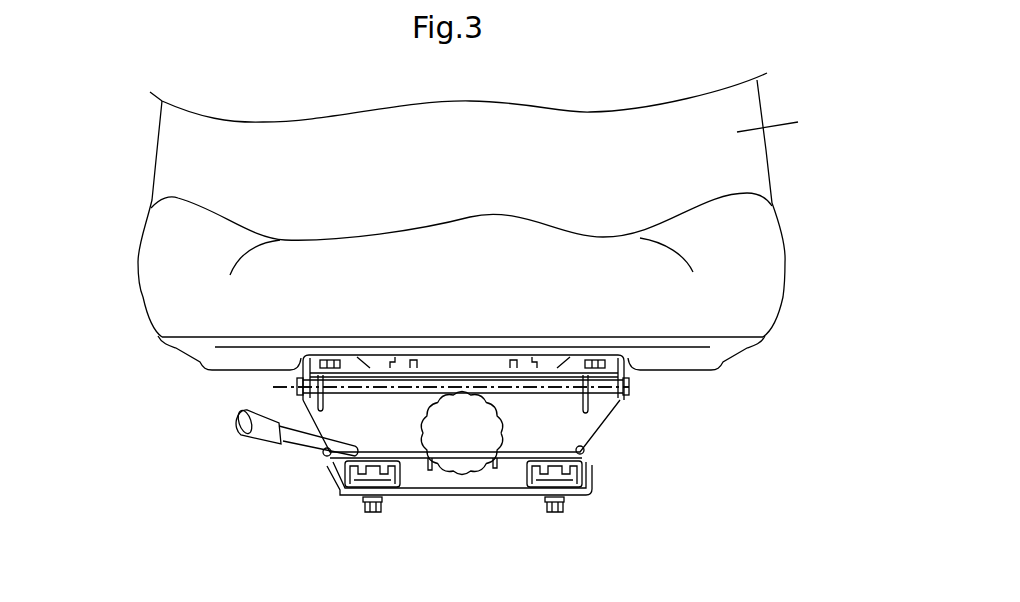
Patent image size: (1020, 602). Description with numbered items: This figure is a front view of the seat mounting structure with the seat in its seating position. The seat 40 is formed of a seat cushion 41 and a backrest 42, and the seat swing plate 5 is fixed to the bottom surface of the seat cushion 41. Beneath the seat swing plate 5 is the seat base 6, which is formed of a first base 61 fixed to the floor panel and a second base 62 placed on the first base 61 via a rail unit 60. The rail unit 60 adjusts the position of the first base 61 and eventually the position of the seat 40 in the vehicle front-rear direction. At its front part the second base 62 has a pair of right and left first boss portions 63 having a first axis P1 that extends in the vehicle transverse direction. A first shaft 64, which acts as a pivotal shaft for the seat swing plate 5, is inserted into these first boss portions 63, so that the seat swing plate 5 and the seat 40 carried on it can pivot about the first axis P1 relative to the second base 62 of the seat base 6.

The seat 40 is at (154, 170).
The seat cushion 41 is at (375, 230).
The backrest 42 is at (784, 120).
The seat swing plate 5 is at (293, 368).
The first shaft 64 is at (460, 377).
The first axis P1 is at (630, 387).
The first boss portions 63 is at (327, 402).
The second base 62 is at (590, 446).
The first base 61 is at (590, 475).
The rail unit 60 is at (402, 475).
The seat base 6 is at (655, 463).